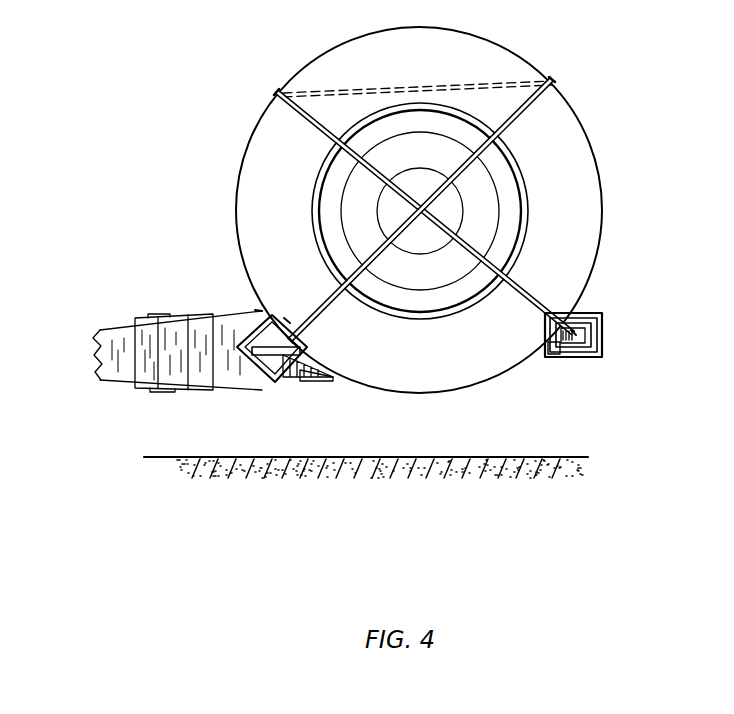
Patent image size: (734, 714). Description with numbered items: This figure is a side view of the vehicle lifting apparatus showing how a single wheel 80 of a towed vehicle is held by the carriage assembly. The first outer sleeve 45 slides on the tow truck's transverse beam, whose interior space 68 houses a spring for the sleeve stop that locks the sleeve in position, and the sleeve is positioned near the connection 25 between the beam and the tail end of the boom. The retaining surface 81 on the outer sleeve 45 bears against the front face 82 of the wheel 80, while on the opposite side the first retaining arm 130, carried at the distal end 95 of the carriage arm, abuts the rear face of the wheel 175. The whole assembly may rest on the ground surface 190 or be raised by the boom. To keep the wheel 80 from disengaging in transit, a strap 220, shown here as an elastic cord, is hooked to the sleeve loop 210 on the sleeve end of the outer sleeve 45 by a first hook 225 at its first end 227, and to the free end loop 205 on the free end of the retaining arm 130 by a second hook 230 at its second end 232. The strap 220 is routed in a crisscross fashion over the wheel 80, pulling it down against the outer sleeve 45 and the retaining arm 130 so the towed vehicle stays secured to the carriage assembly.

The connection 25 is at (203, 315).
The first outer sleeve 45 is at (268, 383).
The interior space 68 is at (292, 380).
The wheel 80 is at (577, 178).
The retaining surface 81 is at (288, 320).
The front face 82 is at (262, 310).
The distal end 95 is at (565, 362).
The first retaining arm 130 is at (600, 328).
The rear face of the wheel 175 is at (587, 308).
The ground surface 190 is at (537, 457).
The free end loop 205 is at (600, 343).
The sleeve loop 210 is at (278, 383).
The strap 220 is at (567, 108).
The first hook 225 is at (303, 385).
The first end 227 is at (298, 338).
The second hook 230 is at (580, 358).
The second end 232 is at (555, 332).